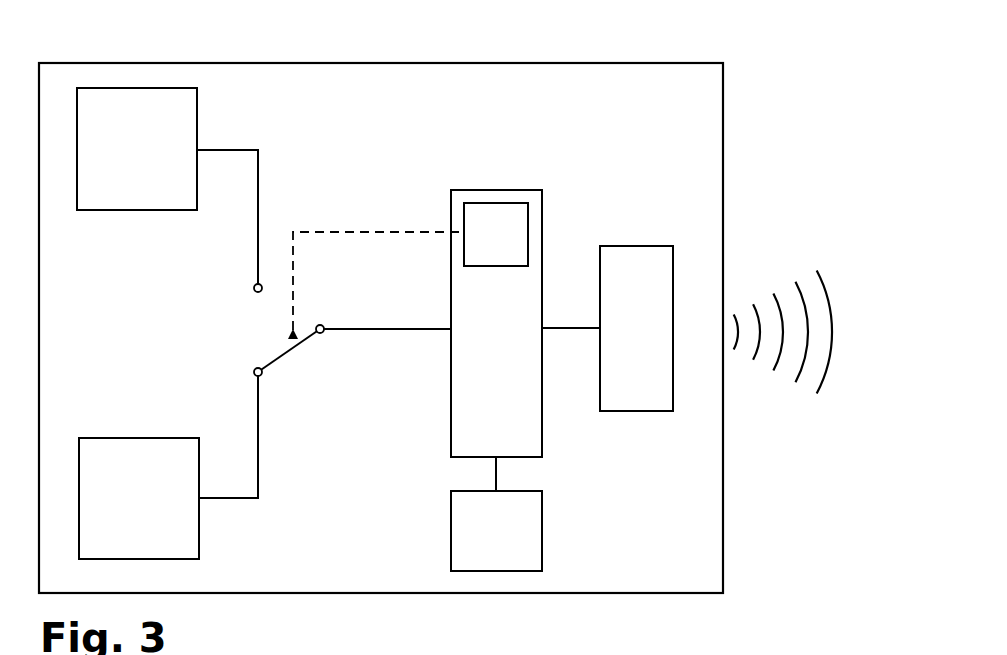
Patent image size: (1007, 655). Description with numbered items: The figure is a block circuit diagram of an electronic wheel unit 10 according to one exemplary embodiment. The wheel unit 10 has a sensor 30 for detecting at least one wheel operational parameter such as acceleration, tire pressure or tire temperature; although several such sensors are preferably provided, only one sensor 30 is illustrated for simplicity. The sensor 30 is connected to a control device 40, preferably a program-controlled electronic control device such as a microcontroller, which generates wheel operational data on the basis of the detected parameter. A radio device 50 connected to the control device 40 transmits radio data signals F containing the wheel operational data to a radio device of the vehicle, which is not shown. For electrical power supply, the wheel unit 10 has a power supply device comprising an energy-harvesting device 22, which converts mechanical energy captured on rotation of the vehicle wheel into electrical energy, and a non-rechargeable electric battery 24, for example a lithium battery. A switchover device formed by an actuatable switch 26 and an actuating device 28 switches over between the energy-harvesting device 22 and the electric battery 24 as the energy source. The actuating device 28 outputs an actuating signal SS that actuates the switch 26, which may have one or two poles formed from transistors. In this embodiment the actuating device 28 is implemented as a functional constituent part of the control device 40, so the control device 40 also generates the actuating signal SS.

The electronic wheel unit 10 is at (103, 44).
The energy-harvesting device 22 is at (155, 162).
The non-rechargeable electric battery 24 is at (155, 510).
The actuatable switch 26 is at (307, 369).
The actuating device 28 is at (510, 248).
The sensor 30 is at (510, 543).
The control device 40 is at (511, 348).
The radio device 50 is at (653, 347).
The actuating signal SS is at (378, 267).
The radio data signals F is at (834, 259).